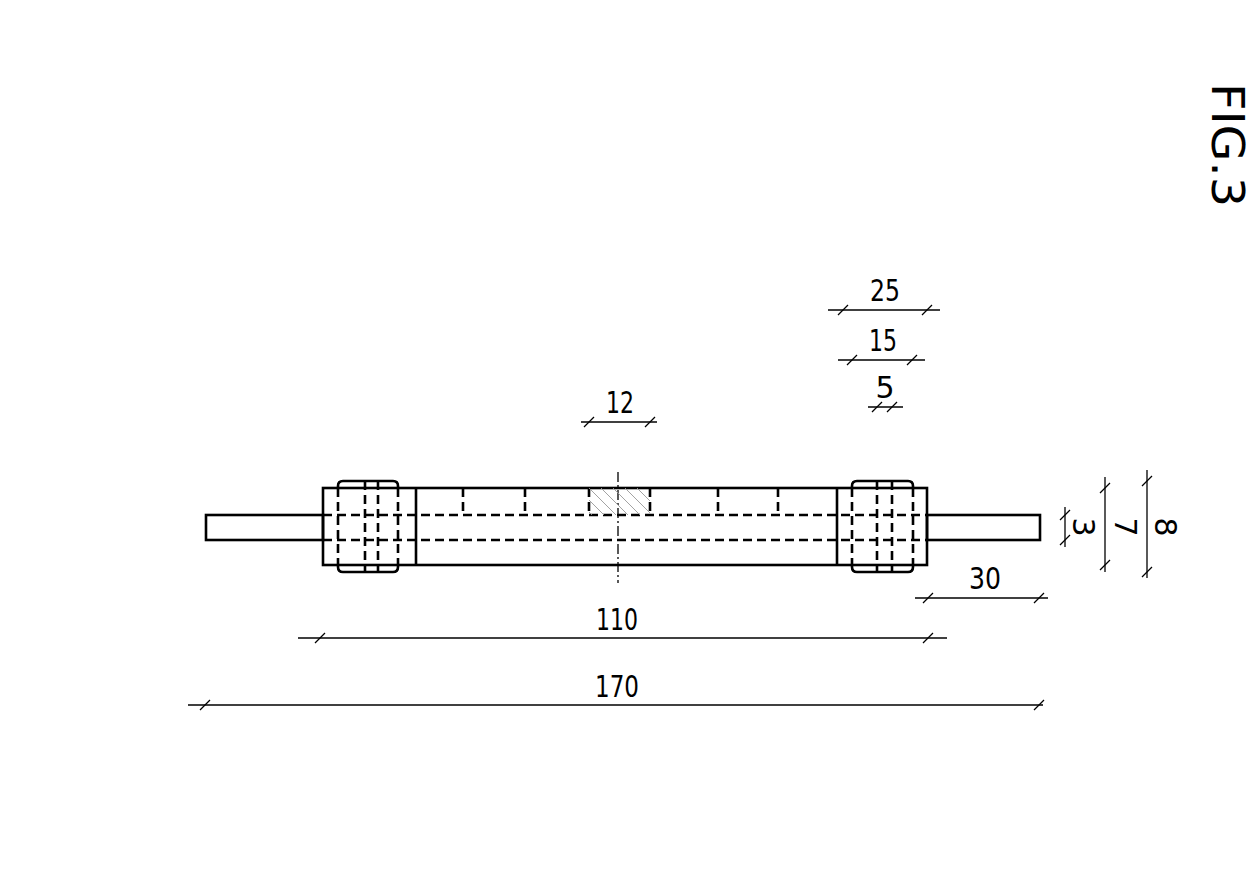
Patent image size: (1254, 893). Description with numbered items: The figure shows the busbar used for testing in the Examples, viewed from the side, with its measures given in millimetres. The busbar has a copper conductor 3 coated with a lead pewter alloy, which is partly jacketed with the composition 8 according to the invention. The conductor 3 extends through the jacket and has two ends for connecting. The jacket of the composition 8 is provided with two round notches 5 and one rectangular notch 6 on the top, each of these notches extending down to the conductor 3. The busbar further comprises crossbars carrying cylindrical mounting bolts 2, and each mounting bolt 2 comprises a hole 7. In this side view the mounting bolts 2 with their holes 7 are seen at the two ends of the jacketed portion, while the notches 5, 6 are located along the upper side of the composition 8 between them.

The cylindrical mounting bolt 2 is at (870, 492).
The conductor 3 is at (945, 522).
The round notch 5 is at (748, 500).
The rectangular notch 6 is at (688, 451).
The hole 7 is at (910, 437).
The composition 8 is at (570, 503).